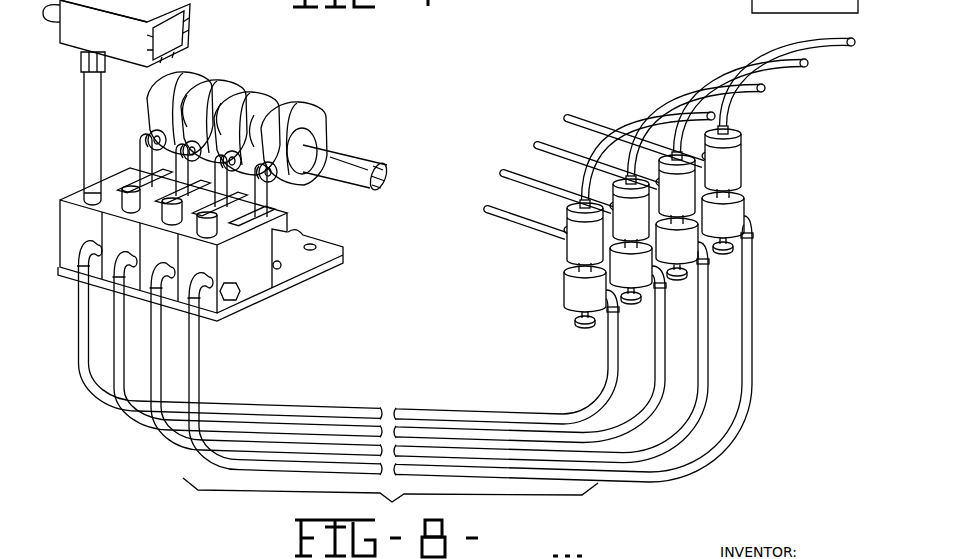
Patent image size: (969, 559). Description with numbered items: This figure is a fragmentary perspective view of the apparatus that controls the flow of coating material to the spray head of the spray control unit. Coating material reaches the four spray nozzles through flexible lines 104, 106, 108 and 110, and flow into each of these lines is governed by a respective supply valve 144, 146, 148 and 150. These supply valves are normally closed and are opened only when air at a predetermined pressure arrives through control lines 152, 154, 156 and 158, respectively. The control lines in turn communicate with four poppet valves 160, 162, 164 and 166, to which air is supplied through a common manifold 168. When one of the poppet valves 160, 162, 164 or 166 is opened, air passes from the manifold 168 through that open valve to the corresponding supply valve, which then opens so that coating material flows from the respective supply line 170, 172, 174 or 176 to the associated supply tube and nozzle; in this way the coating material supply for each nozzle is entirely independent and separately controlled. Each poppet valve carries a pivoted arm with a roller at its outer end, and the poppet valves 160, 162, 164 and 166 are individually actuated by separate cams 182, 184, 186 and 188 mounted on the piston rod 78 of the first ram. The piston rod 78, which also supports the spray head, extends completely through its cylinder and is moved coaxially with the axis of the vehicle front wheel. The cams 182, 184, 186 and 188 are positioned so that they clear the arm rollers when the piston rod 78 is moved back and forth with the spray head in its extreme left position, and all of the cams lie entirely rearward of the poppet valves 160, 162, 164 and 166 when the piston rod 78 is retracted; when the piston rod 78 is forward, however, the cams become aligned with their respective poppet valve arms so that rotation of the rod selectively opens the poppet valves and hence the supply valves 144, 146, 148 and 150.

The piston rod 78 is at (352, 149).
The flexible line 104 is at (649, 115).
The flexible line 106 is at (692, 86).
The flexible line 108 is at (728, 63).
The flexible line 110 is at (776, 43).
The supply valve 144 is at (586, 254).
The supply valve 146 is at (632, 230).
The supply valve 148 is at (678, 206).
The supply valve 150 is at (724, 180).
The control line 152 is at (100, 406).
The control line 154 is at (157, 430).
The control line 156 is at (165, 353).
The control line 158 is at (202, 384).
The poppet valve 160 is at (79, 234).
The poppet valve 162 is at (124, 246).
The poppet valve 164 is at (160, 256).
The poppet valve 166 is at (197, 269).
The manifold 168 is at (119, 67).
The supply line 170 is at (489, 215).
The supply line 172 is at (505, 178).
The supply line 174 is at (539, 150).
The supply line 176 is at (568, 120).
The cam 182 is at (197, 73).
The cam 184 is at (238, 86).
The cam 186 is at (288, 96).
The cam 188 is at (328, 114).